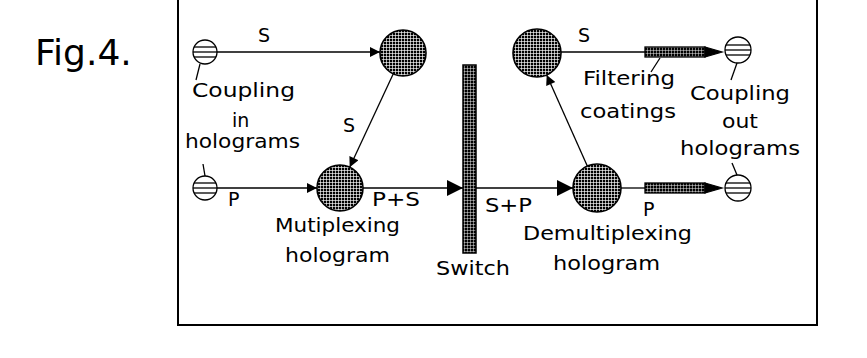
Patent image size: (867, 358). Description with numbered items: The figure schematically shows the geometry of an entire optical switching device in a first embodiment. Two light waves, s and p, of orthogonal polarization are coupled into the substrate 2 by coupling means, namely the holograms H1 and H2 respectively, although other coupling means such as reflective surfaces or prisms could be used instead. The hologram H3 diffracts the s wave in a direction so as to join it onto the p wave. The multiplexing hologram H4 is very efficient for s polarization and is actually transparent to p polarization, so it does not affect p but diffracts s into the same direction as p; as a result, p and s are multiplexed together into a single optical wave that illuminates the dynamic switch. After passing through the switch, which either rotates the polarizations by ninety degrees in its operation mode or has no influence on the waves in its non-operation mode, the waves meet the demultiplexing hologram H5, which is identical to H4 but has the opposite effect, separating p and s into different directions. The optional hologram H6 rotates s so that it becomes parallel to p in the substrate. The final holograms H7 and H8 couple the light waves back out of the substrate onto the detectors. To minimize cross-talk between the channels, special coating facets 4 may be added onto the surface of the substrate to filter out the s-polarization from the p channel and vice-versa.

The substrate 2 is at (464, 128).
The coating facets 4 is at (667, 47).
The coupling hologram H1 is at (208, 33).
The coupling hologram H2 is at (204, 207).
The hologram H3 is at (403, 38).
The multiplexing hologram H4 is at (351, 179).
The demultiplexing hologram H5 is at (576, 176).
The optional hologram H6 is at (537, 38).
The coupling-out hologram H7 is at (750, 35).
The coupling-out hologram H8 is at (744, 207).